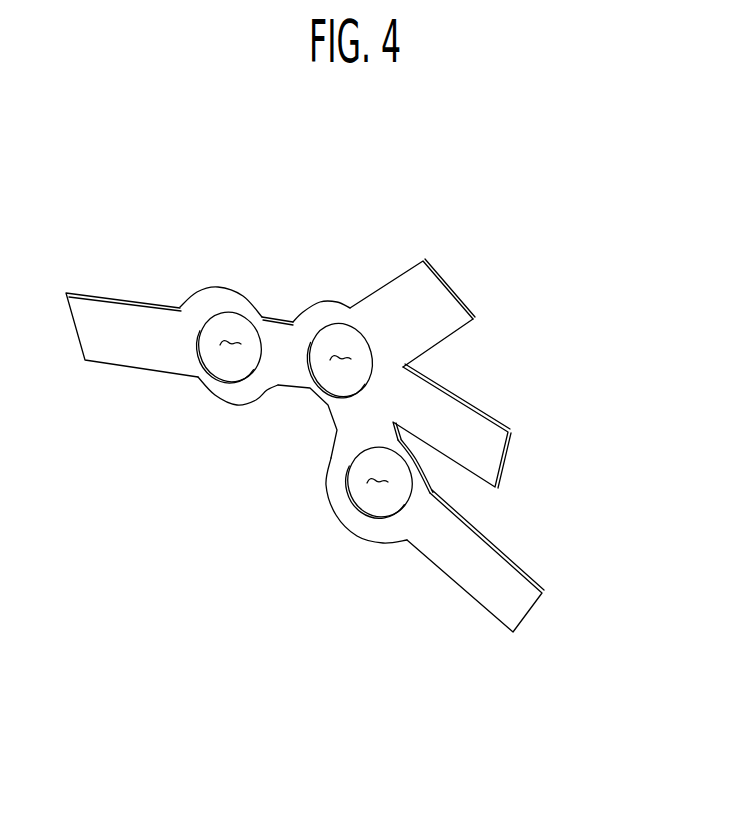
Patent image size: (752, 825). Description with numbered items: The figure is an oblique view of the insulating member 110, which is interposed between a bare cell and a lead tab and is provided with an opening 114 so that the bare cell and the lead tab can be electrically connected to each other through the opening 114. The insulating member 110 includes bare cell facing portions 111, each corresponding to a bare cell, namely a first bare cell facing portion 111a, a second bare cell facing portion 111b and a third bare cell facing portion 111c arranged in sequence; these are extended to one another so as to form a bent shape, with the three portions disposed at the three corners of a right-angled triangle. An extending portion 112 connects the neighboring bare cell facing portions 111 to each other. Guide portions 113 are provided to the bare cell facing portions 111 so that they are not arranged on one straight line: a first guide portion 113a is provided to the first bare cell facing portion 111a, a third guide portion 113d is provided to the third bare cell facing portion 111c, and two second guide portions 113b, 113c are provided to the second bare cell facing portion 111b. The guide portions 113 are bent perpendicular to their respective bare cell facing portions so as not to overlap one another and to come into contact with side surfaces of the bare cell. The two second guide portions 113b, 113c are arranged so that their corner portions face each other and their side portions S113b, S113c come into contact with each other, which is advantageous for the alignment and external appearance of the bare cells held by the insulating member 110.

The insulating member 110 is at (512, 190).
The bare cell facing portion 111 is at (423, 188).
The first bare cell facing portion 111a is at (223, 303).
The second bare cell facing portion 111b is at (315, 316).
The third bare cell facing portion 111c is at (415, 468).
The extending portion 112 is at (283, 342).
The guide portion 113 is at (615, 304).
The first guide portion 113a is at (117, 342).
The second guide portion 113b is at (445, 325).
The side portion S113b is at (442, 347).
The side portion S113c is at (490, 413).
The second guide portion 113c is at (487, 453).
The third guide portion 113d is at (517, 603).
The opening 114 is at (335, 365).